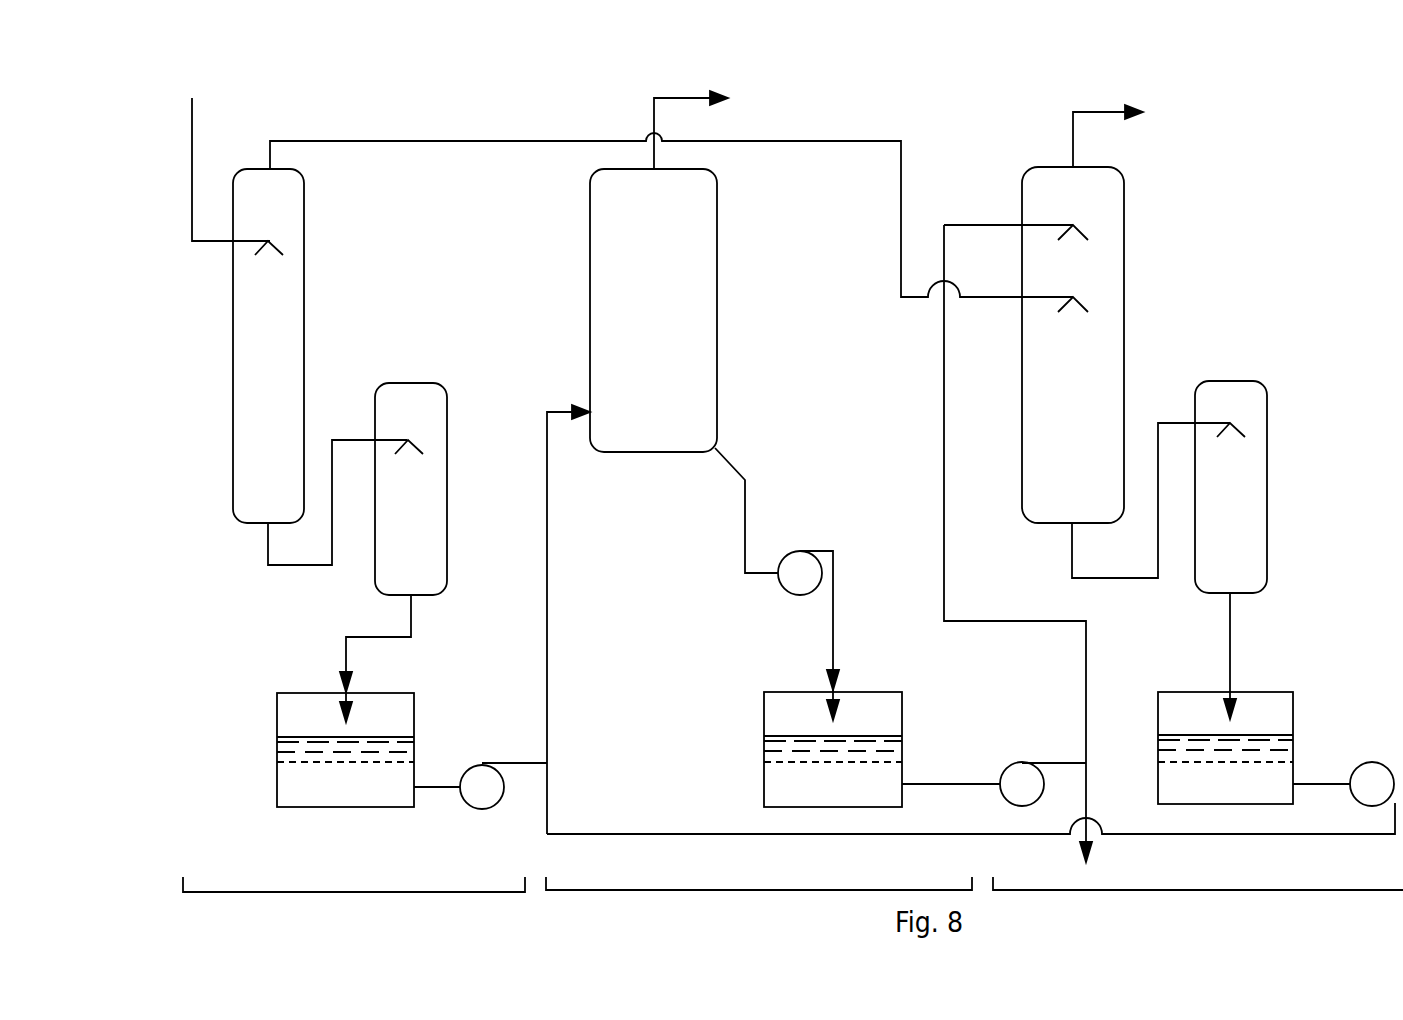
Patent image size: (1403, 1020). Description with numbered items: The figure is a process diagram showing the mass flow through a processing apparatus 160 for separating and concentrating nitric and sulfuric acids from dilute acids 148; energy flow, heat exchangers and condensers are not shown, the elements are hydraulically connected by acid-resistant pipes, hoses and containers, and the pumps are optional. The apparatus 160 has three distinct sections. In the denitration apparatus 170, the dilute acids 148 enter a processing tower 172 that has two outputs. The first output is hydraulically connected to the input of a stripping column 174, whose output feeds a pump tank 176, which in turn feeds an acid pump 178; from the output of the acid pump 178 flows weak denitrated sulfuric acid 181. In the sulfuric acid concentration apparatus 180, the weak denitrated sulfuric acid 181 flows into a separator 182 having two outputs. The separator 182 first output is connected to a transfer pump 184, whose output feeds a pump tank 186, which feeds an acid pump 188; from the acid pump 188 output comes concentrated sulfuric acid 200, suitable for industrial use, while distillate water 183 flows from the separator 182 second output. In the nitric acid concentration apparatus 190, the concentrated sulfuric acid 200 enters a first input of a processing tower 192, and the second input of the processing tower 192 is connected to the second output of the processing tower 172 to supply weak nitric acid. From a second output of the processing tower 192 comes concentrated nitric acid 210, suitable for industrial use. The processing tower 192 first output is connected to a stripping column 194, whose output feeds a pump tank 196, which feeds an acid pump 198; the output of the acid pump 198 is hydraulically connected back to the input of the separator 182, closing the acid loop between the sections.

The dilute acids 148 is at (221, 150).
The processing apparatus 160 is at (488, 92).
The denitration apparatus 170 is at (354, 908).
The processing tower 172 is at (295, 360).
The stripping column 174 is at (438, 527).
The pump tank 176 is at (367, 801).
The acid pump 178 is at (467, 773).
The H2SO4 concentration apparatus 180 is at (759, 908).
The weak denitrated H2SO4 181 is at (548, 632).
The separator 182 is at (681, 325).
The distillate H2O 183 is at (721, 126).
The transfer pump 184 is at (797, 560).
The pump tank 186 is at (850, 796).
The acid pump 188 is at (1015, 765).
The HNO3 concentration apparatus 190 is at (1198, 908).
The processing tower 192 is at (1103, 423).
The stripping column 194 is at (1258, 524).
The pump tank 196 is at (1253, 799).
The acid pump 198 is at (1378, 768).
The concentrated H2SO4 200 is at (943, 450).
The concentrated HNO3 210 is at (1139, 133).